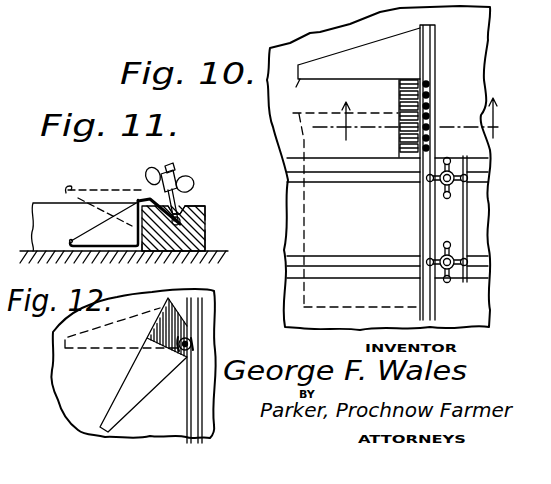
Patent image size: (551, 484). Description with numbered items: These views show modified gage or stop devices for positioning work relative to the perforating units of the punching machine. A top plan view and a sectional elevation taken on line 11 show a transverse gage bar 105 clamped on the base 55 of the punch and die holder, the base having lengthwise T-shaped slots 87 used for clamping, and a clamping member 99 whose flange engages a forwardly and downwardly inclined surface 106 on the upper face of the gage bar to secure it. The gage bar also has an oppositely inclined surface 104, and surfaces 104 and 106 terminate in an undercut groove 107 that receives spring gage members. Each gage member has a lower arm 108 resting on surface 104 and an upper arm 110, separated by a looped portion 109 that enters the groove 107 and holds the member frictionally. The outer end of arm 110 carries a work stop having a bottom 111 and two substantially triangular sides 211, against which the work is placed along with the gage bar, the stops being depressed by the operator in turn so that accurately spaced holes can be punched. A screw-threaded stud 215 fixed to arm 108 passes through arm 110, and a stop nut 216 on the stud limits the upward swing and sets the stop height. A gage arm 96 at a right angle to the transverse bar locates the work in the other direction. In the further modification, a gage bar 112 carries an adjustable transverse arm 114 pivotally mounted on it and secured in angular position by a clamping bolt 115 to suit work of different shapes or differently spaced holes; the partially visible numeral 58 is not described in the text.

In FIG. 10, the transverse gage bar 105 is at (437, 41).
In FIG. 11, the transverse gage bar 105 is at (207, 237).
In FIG. 10, the undercut groove 107 is at (430, 53).
In FIG. 11, the undercut groove 107 is at (177, 240).
In FIG. 10, the arm of gage member 96 is at (309, 80).
In FIG. 11, the arm of gage member 96 is at (84, 227).
In FIG. 10, the arm 108 is at (431, 127).
In FIG. 11, the arm 108 is at (148, 240).
In FIG. 10, the section line 11— 11 is at (415, 119).
In FIG. 10, the base 55 is at (331, 283).
In FIG. 12, the base 55 is at (9, 352).
In FIG. 10, the T-shaped slots 87 is at (348, 180).
In FIG. 10, the clamping member 99 is at (443, 215).
In FIG. 11, the bottom of stop device 111 is at (65, 192).
In FIG. 11, the triangular sides 211 is at (104, 223).
In FIG. 11, the inclined surface 106 is at (190, 207).
In FIG. 11, the looped portion 109 is at (208, 217).
In FIG. 11, the arm 110 is at (148, 171).
In FIG. 11, the stop nut 216 is at (190, 180).
In FIG. 11, the screw-threaded stud 215 is at (176, 165).
In FIG. 11, the inclined surface 104 is at (146, 189).
In FIG. 12, the gage bar 112 is at (192, 414).
In FIG. 12, the adjustable transverse arm 114 is at (131, 370).
In FIG. 12, the clamping bolt 115 is at (197, 334).
In FIG. 12, the member 58 is at (9, 325).